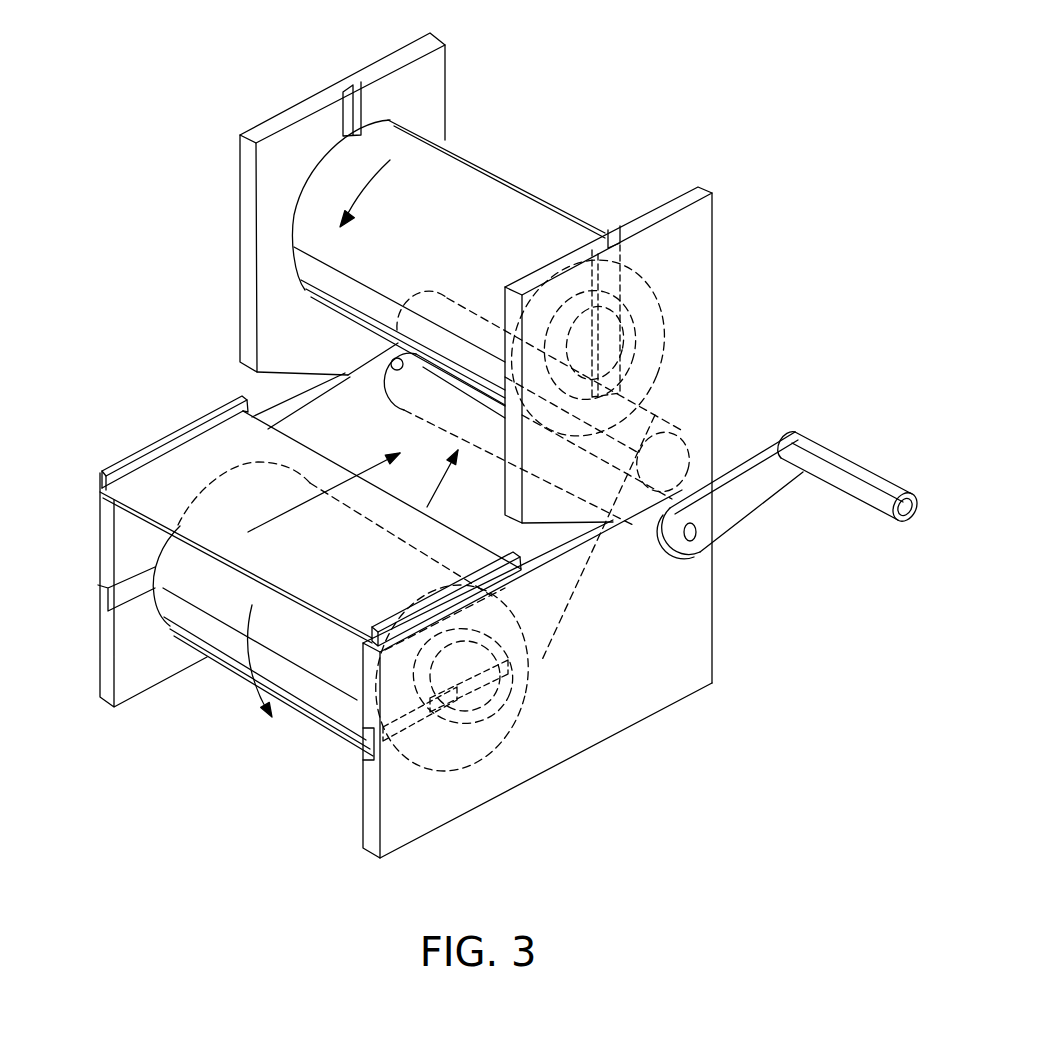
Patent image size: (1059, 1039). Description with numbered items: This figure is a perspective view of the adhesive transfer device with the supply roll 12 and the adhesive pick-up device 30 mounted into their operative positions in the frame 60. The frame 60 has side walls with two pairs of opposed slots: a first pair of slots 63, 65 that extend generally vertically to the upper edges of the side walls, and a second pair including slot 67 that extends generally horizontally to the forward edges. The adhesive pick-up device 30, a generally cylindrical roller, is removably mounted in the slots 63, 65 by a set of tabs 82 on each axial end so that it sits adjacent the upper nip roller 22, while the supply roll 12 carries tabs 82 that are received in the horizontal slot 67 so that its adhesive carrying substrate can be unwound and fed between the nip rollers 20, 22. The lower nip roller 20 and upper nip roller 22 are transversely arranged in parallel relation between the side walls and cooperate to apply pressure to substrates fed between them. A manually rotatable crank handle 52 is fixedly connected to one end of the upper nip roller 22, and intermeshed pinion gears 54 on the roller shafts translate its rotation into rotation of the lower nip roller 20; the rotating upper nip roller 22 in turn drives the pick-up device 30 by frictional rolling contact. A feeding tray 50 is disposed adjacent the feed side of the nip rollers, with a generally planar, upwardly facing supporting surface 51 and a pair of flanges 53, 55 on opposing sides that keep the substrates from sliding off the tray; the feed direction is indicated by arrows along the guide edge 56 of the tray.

The supply roll 12 is at (208, 657).
The lower nip roller 20 is at (628, 503).
The upper nip roller 22 is at (640, 423).
The adhesive pick-up device 30 is at (510, 210).
The feeding tray 50 is at (281, 524).
The supporting surface 51 is at (227, 535).
The crank handle 52 is at (866, 483).
The flange 53 is at (150, 447).
The pinion gear 54 is at (215, 445).
The flange 55 is at (390, 628).
The feed guide edge 56 is at (333, 462).
The frame 60 is at (692, 302).
The slot 63 is at (347, 97).
The slot 65 is at (612, 270).
The slot 67 is at (368, 752).
The tabs 82 is at (450, 713).